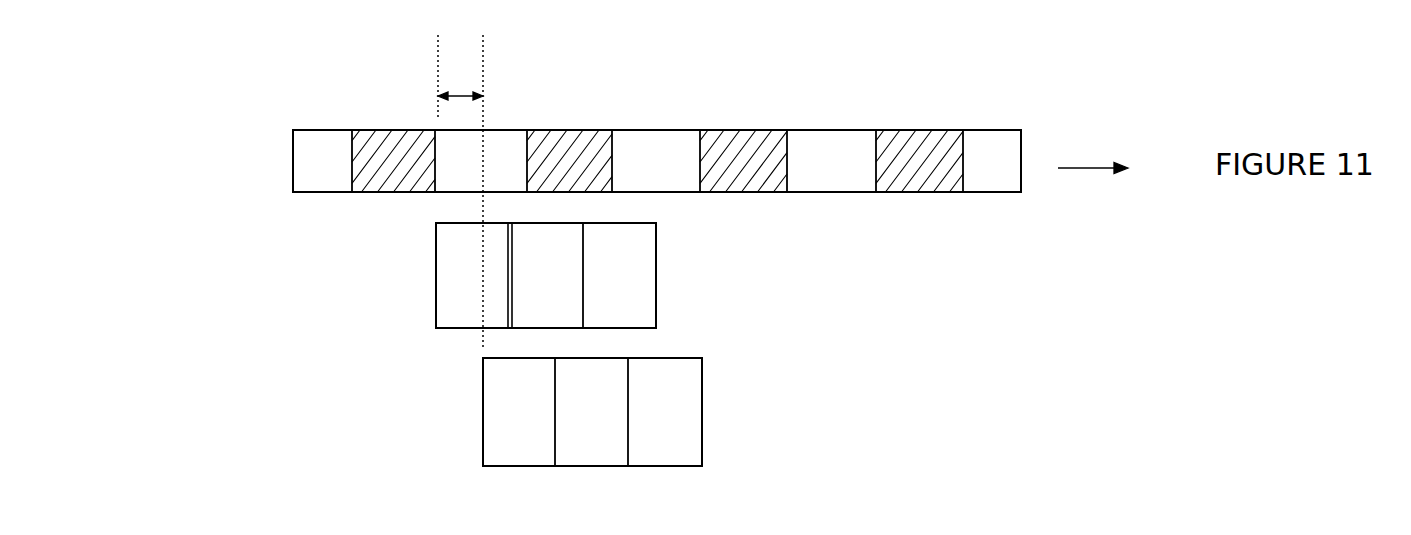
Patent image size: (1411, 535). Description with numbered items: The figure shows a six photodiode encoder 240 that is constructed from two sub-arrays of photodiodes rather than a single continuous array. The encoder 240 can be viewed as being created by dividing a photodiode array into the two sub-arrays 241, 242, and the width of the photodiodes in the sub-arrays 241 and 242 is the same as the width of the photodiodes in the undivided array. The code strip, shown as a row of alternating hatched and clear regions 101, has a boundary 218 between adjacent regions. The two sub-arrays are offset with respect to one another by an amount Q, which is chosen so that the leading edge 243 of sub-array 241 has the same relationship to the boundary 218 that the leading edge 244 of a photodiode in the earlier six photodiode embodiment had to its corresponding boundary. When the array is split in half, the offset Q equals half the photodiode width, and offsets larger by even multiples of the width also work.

The six photodiode encoder 240 is at (220, 138).
The substrate strip 101 is at (973, 130).
The boundary 218 is at (434, 157).
The sub-array 242 is at (657, 280).
The leading edge 243 is at (437, 300).
The sub-array 241 is at (702, 413).
The leading edge 244 is at (482, 417).